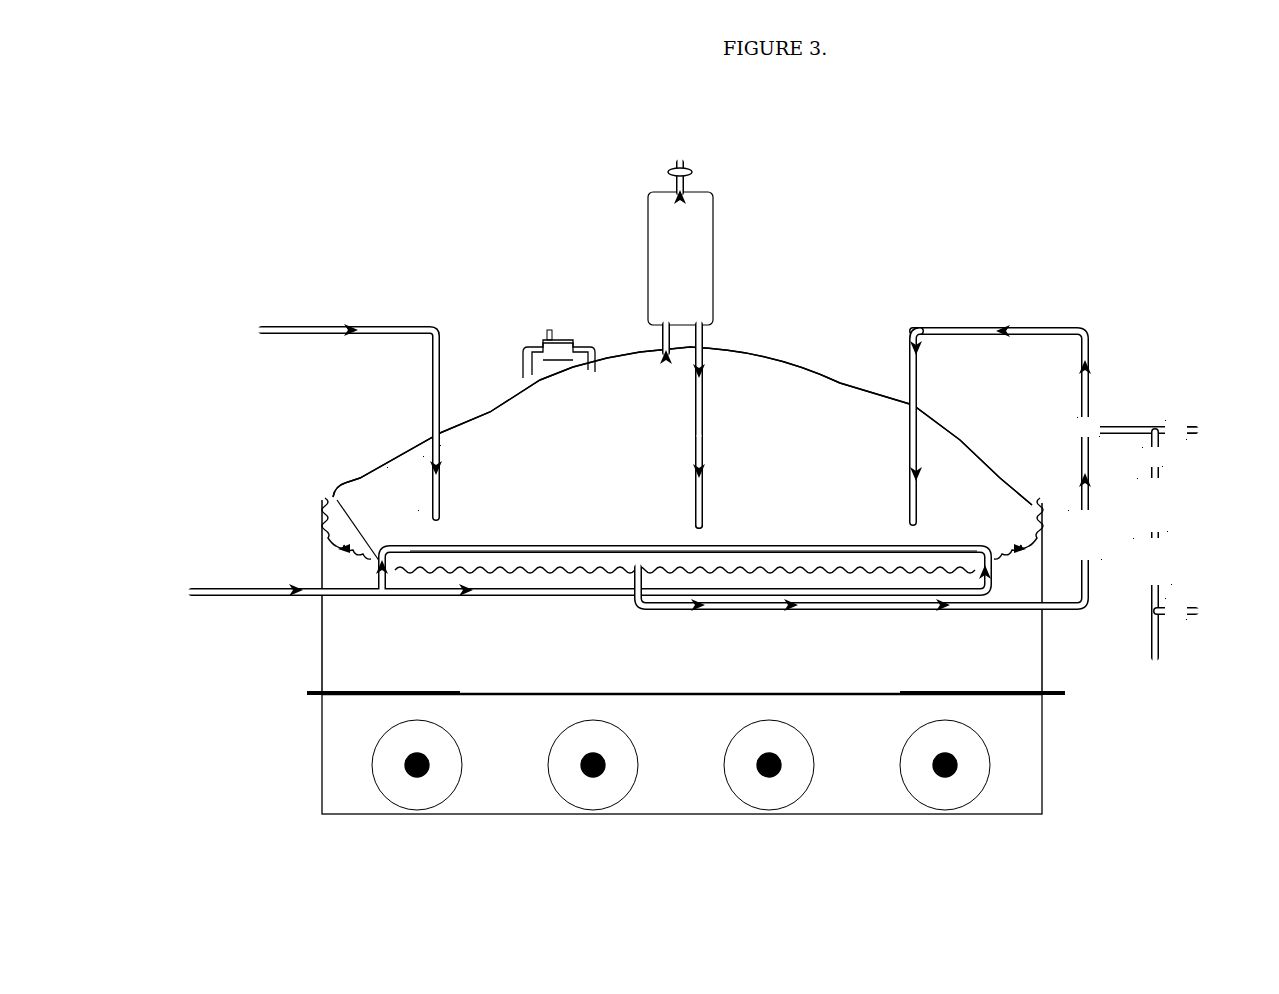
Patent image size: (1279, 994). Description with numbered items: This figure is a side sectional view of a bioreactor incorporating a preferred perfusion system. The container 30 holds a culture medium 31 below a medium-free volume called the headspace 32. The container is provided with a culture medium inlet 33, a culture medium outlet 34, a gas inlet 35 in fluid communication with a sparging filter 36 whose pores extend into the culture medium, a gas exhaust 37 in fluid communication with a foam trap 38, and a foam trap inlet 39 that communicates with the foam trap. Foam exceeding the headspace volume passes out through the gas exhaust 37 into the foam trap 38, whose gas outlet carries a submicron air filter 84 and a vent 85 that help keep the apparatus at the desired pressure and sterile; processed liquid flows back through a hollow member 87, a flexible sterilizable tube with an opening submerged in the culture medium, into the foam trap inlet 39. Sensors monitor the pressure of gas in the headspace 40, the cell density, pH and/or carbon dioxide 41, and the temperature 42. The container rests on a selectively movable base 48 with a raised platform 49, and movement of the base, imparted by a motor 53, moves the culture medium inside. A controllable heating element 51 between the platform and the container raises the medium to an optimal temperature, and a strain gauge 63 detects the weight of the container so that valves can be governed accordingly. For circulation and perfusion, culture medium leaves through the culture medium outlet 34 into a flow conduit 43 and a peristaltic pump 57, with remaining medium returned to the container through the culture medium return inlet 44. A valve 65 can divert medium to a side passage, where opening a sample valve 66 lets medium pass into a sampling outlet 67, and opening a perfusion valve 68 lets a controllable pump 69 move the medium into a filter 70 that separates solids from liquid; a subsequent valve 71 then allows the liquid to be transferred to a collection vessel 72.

The container 30 is at (510, 393).
The culture medium 31 is at (423, 457).
The headspace 32 is at (825, 403).
The culture medium inlet 33 is at (432, 433).
The culture medium outlet 34 is at (617, 570).
The gas inlet 35 is at (275, 590).
The sparging filter 36 is at (862, 547).
The gas exhaust 37 is at (662, 352).
The foam trap 38 is at (714, 247).
The foam trap inlet 39 is at (700, 348).
The headspace gas pressure sensor 40 is at (565, 345).
The cell density, pH and/or carbon dioxide sensor 41 is at (362, 538).
The temperature sensor 42 is at (387, 470).
The flow conduit 43 is at (980, 607).
The culture medium return inlet 44 is at (920, 423).
The selectively movable base 48 is at (343, 768).
The raised platform 49 is at (497, 668).
The controllable heating element 51 is at (1028, 507).
The motor 53 is at (990, 765).
The pump 57 is at (1093, 521).
The strain gauge 63 is at (333, 692).
The valve 65 is at (1090, 427).
The sample valve 66 is at (1177, 427).
The sampling outlet 67 is at (1197, 430).
The perfusion valve 68 is at (1163, 457).
The controllable pump 69 is at (1160, 507).
The filter 70 is at (1160, 566).
The valve 71 is at (1178, 615).
The collection vessel 72 is at (1155, 652).
The submicron air filter 84 is at (684, 183).
The vent 85 is at (672, 170).
The hollow member 87 is at (702, 443).